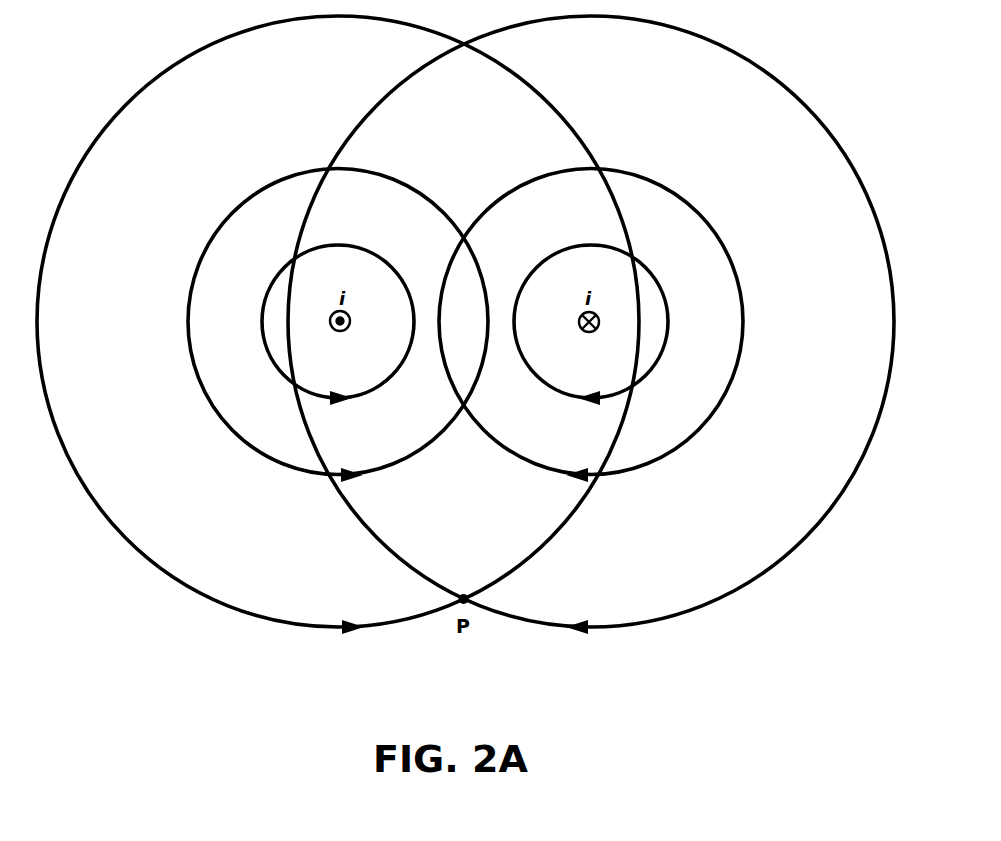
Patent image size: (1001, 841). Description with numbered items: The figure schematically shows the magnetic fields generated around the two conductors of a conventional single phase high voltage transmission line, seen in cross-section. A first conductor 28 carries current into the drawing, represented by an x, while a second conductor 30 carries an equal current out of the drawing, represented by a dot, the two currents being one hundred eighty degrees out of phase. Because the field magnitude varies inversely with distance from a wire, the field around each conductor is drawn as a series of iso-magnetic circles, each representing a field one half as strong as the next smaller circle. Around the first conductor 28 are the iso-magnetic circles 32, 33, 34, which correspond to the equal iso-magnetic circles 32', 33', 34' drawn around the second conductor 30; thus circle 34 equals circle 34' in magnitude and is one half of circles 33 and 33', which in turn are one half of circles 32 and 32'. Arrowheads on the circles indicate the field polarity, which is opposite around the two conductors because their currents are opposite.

The first conductor 28 is at (587, 333).
The second conductor 30 is at (345, 330).
The iso-magnetic circle 32 is at (618, 325).
The iso-magnetic circle 32' is at (323, 325).
The iso-magnetic circle 33 is at (618, 326).
The iso-magnetic circle 33' is at (317, 326).
The iso-magnetic circle 34 is at (591, 325).
The iso-magnetic circle 34' is at (338, 325).